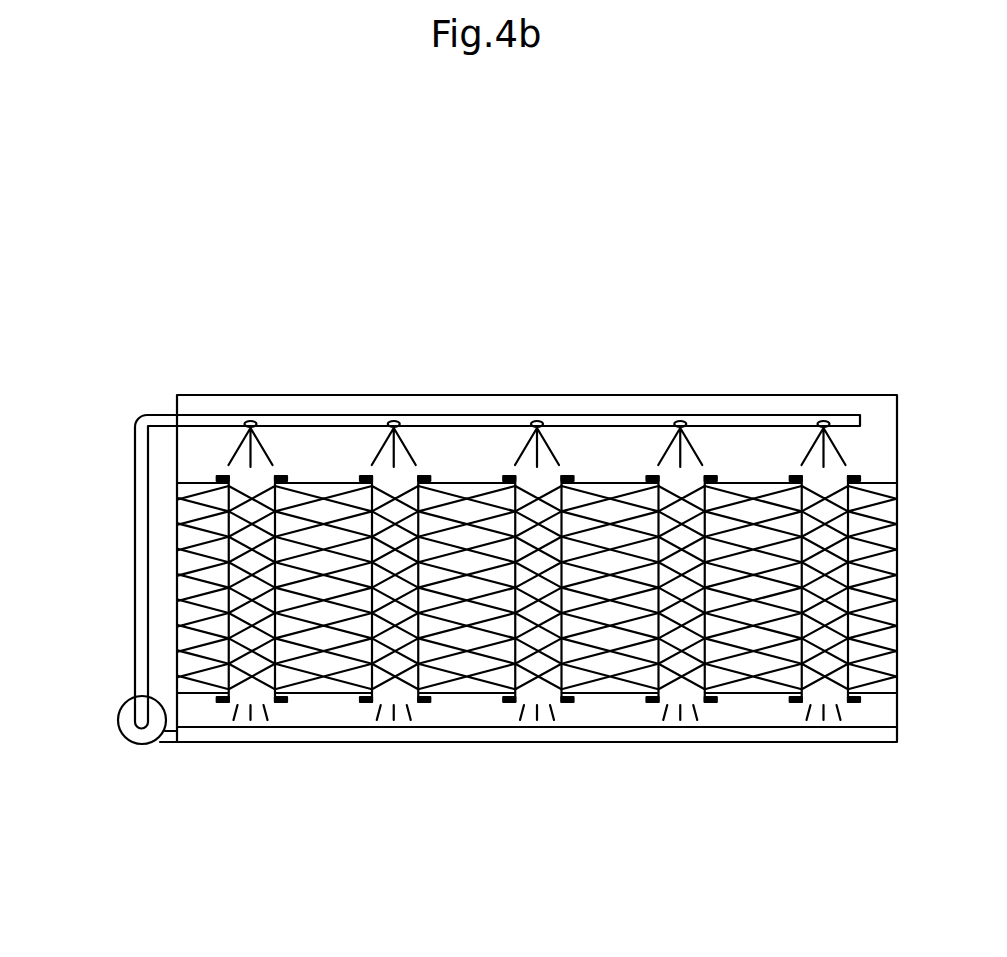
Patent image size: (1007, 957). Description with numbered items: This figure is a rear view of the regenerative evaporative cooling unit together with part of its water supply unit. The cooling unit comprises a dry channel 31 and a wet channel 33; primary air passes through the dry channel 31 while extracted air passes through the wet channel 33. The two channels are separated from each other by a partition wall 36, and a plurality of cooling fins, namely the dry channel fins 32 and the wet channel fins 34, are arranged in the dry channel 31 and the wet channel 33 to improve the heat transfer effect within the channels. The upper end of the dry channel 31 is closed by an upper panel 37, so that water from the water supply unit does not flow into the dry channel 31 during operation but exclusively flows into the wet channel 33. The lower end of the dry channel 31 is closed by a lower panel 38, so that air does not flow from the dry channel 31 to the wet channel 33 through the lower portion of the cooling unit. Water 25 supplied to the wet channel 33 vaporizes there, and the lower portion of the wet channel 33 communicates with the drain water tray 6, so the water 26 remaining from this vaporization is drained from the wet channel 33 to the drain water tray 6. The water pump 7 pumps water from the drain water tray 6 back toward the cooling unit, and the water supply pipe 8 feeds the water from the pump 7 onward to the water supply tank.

The drain water tray 6 is at (568, 737).
The water pump 7 is at (125, 712).
The water supply pipe 8 is at (137, 447).
The water 25 is at (558, 450).
The remaining water 26 is at (677, 708).
The dry channel 31 is at (753, 510).
The dry channel fins 32 is at (772, 502).
The wet channel 33 is at (390, 497).
The wet channel fins 34 is at (405, 493).
The partition wall 36 is at (227, 481).
The upper panel 37 is at (317, 481).
The lower panel 38 is at (745, 698).